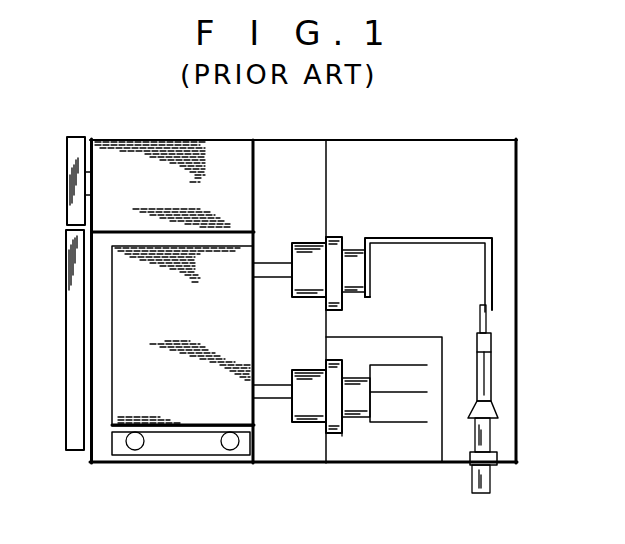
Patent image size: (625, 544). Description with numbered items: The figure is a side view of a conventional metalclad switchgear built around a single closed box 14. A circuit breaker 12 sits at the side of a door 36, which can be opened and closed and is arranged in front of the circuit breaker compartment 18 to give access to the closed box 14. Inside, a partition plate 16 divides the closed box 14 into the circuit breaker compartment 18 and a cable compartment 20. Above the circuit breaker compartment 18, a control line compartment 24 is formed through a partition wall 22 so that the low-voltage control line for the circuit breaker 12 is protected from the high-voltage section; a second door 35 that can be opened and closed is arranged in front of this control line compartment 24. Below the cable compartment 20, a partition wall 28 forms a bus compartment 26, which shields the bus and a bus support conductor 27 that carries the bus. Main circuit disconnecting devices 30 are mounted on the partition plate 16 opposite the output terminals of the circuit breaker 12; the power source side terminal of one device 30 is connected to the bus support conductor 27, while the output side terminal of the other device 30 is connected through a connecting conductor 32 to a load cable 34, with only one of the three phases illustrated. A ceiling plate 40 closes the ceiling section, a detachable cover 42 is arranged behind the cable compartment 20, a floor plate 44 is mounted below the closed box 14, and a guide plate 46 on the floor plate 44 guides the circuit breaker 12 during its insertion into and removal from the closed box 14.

The circuit breaker 12 is at (118, 407).
The closed box 14 is at (434, 140).
The partition plate 16 is at (328, 318).
The circuit breaker compartment 18 is at (92, 290).
The cable compartment 20 is at (517, 178).
The partition wall 22 is at (256, 172).
The control line compartment 24 is at (181, 160).
The bus compartment 26 is at (347, 445).
The bus support conductor 27 is at (387, 423).
The partition wall 28 is at (440, 447).
The main circuit disconnecting device 30 is at (307, 243).
The connecting conductor 32 is at (433, 238).
The load cable 34 is at (488, 368).
The door 35 is at (67, 199).
The door 36 is at (66, 397).
The ceiling plate 40 is at (292, 140).
The detachable cover 42 is at (517, 303).
The floor plate 44 is at (194, 462).
The guide plate 46 is at (163, 452).